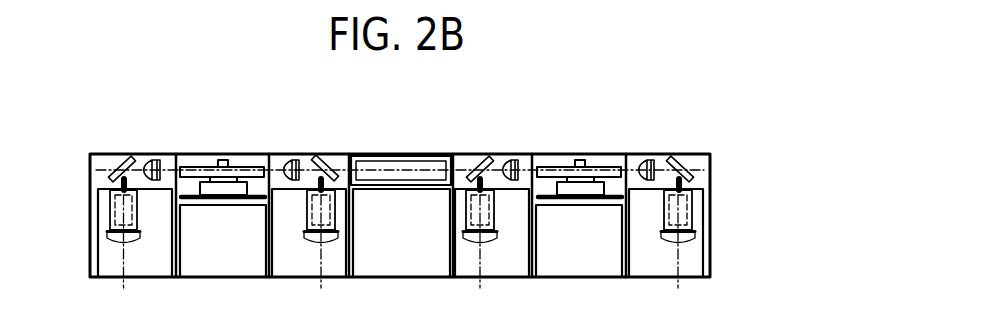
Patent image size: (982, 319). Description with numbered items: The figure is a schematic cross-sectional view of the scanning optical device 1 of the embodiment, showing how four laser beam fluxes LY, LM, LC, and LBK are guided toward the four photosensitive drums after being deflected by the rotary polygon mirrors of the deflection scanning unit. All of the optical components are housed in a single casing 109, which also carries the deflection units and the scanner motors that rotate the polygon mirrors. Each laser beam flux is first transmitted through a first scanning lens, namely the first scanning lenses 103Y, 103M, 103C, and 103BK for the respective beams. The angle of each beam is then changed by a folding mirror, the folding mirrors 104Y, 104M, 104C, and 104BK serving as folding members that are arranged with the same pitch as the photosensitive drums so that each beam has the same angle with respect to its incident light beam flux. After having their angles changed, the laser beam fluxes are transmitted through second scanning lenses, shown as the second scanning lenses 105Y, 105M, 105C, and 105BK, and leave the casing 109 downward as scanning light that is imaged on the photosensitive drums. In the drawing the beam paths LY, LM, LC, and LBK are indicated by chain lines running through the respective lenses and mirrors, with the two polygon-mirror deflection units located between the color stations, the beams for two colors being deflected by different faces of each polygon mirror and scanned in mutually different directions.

The scanning optical device 1 is at (546, 124).
The first scanning lens 103Y is at (147, 155).
The folding mirror 104Y is at (108, 172).
The second scanning lens 105Y is at (109, 242).
The laser beam flux LY is at (127, 247).
The first scanning lens 103M is at (318, 135).
The folding mirror 104M is at (373, 135).
The second scanning lens 105M is at (327, 243).
The laser beam flux LM is at (318, 245).
The first scanning lens 103C is at (502, 155).
The folding mirror 104C is at (466, 155).
The second scanning lens 105C is at (494, 243).
The laser beam flux LC is at (482, 243).
The first scanning lens 103BK is at (677, 135).
The folding mirror 104BK is at (690, 156).
The second scanning lens 105BK is at (692, 238).
The laser beam flux LBK is at (680, 247).
The casing 109 is at (403, 187).